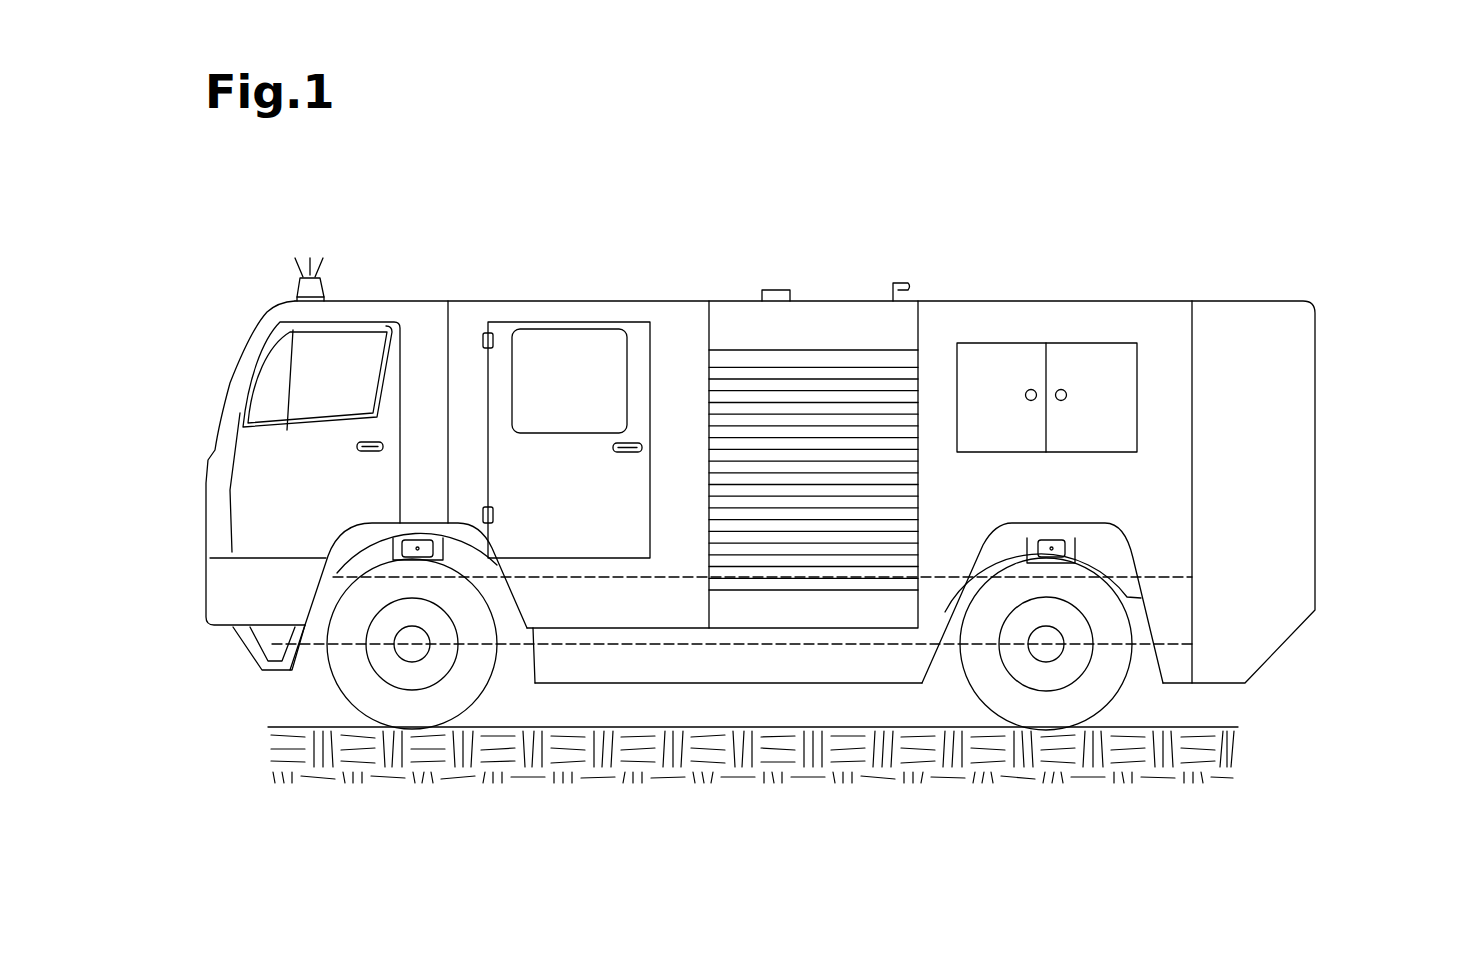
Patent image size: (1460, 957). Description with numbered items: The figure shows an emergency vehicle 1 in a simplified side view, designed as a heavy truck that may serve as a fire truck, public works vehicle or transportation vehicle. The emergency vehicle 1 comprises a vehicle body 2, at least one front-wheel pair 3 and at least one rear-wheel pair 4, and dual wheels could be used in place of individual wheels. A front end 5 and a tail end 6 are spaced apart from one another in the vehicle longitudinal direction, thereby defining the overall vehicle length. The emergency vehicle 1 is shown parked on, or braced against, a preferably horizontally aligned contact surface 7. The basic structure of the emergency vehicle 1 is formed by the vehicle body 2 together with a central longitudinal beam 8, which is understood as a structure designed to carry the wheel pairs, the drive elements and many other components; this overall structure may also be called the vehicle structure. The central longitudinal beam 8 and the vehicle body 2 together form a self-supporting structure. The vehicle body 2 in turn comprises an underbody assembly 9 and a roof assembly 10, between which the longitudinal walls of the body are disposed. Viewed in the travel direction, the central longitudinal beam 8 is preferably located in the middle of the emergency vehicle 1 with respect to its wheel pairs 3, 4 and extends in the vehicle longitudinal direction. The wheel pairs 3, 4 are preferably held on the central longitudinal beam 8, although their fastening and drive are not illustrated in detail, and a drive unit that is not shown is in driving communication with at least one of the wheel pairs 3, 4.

The emergency vehicle 1 is at (1202, 140).
The vehicle body 2 is at (705, 253).
The front-wheel pair 3 is at (423, 707).
The rear-wheel pair 4 is at (1043, 710).
The front end 5 is at (213, 302).
The tail end 6 is at (1363, 290).
The contact surface 7 is at (316, 727).
The central longitudinal beam 8 is at (318, 636).
The underbody assembly 9 is at (718, 700).
The roof assembly 10 is at (948, 280).